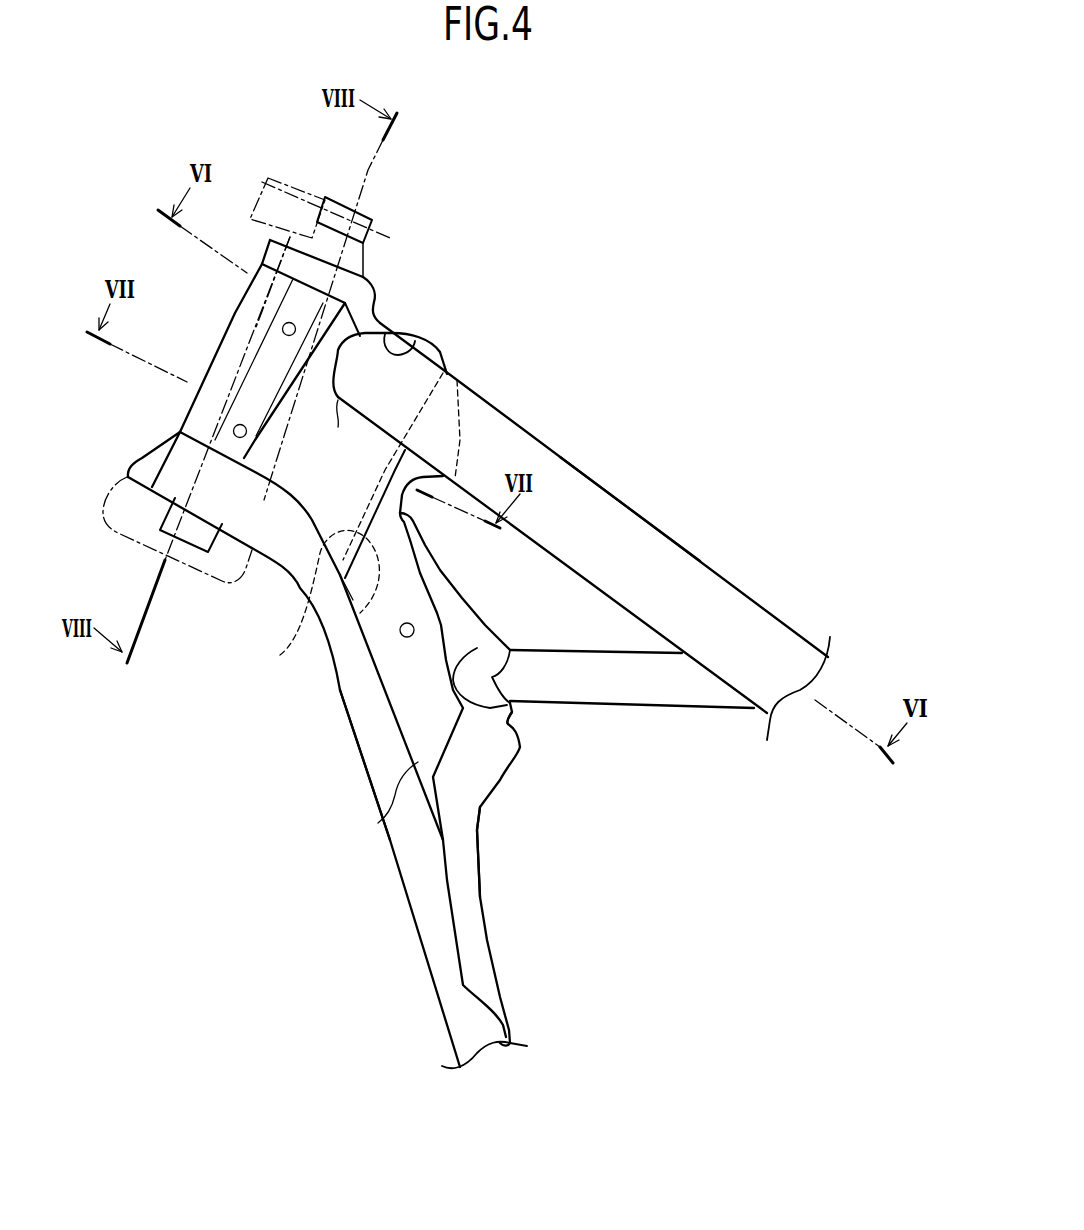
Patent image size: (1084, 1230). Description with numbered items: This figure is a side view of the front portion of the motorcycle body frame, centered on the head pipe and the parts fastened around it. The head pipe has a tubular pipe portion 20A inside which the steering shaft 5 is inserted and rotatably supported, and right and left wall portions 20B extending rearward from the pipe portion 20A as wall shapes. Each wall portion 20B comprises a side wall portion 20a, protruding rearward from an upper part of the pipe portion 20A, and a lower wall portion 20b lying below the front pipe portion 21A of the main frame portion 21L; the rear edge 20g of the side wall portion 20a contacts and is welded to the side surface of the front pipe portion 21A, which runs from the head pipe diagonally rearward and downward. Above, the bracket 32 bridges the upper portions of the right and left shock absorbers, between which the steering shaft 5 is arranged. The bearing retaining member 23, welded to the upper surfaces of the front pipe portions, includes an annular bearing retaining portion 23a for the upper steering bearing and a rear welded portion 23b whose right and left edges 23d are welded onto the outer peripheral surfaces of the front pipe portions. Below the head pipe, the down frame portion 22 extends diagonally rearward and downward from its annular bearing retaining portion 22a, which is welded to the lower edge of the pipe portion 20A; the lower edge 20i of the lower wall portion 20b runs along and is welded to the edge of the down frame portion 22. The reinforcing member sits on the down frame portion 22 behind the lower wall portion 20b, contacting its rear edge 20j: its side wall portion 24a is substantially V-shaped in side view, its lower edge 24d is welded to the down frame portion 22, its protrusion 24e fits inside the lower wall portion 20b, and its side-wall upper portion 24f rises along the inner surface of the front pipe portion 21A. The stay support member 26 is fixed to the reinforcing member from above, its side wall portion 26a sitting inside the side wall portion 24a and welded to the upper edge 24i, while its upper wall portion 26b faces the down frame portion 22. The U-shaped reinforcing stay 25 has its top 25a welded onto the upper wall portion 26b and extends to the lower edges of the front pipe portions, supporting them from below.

The steering shaft 5 is at (245, 357).
The pipe portion 20A is at (243, 307).
The wall portions 20B is at (388, 412).
The side wall portion 20a is at (393, 257).
The lower wall portion 20b is at (337, 483).
The rear edges 20g is at (350, 429).
The lower edges 20i is at (290, 498).
The rear edges 20j is at (382, 600).
The front pipe portion 21A is at (640, 514).
The main frame portion 21L is at (678, 534).
The down frame portion 22 is at (358, 772).
The bearing retaining portion 22a is at (177, 468).
The bearing retaining member 23 is at (388, 298).
The bearing retaining portion 23a is at (290, 237).
The rear welded portion 23b is at (396, 313).
The edges 23d is at (420, 338).
The side wall portions 24a is at (410, 680).
The lower edges 24d is at (380, 823).
The protrusions 24e is at (311, 605).
The side-wall upper portions 24f is at (460, 428).
The upper edges 24i is at (445, 640).
The reinforcing stay 25 is at (673, 703).
The top 25a is at (495, 676).
The stay support member 26 is at (518, 772).
The side wall portions 26a is at (490, 797).
The upper wall portion 26b is at (512, 718).
The bracket 32 is at (388, 234).